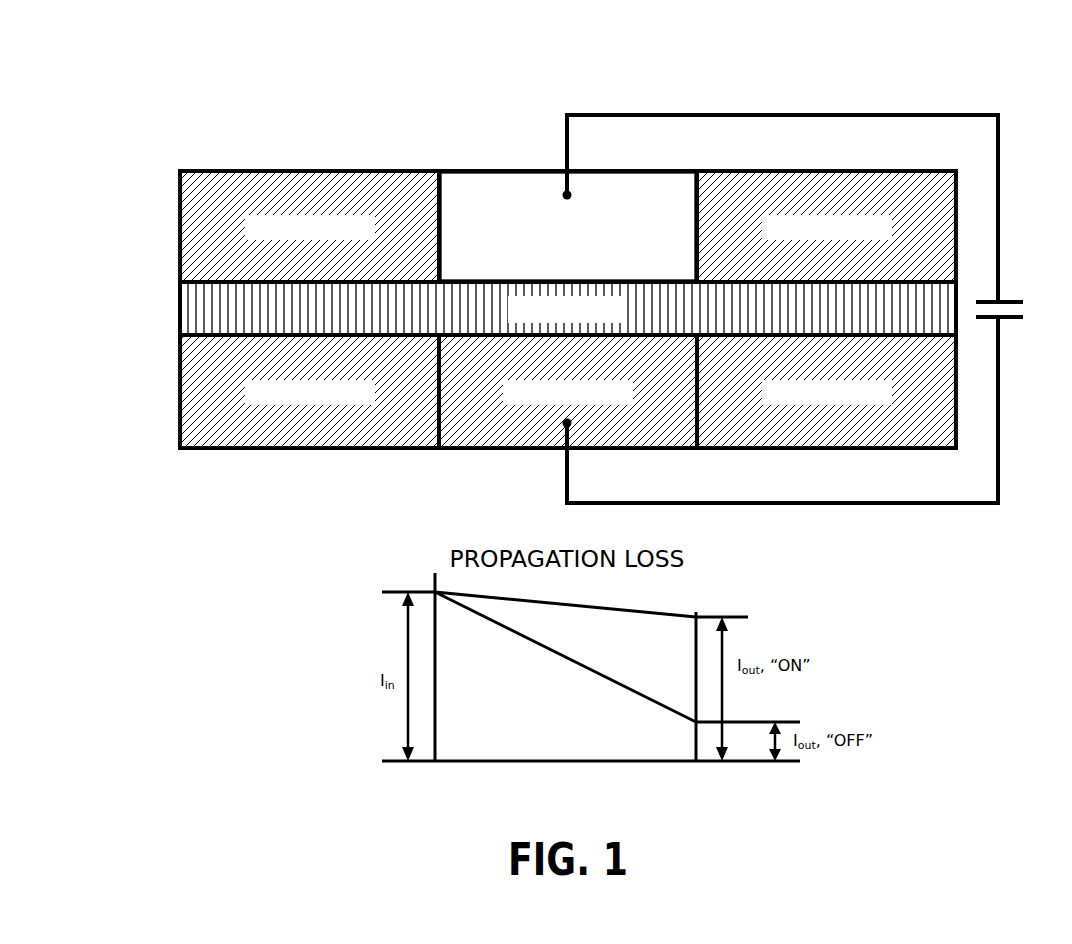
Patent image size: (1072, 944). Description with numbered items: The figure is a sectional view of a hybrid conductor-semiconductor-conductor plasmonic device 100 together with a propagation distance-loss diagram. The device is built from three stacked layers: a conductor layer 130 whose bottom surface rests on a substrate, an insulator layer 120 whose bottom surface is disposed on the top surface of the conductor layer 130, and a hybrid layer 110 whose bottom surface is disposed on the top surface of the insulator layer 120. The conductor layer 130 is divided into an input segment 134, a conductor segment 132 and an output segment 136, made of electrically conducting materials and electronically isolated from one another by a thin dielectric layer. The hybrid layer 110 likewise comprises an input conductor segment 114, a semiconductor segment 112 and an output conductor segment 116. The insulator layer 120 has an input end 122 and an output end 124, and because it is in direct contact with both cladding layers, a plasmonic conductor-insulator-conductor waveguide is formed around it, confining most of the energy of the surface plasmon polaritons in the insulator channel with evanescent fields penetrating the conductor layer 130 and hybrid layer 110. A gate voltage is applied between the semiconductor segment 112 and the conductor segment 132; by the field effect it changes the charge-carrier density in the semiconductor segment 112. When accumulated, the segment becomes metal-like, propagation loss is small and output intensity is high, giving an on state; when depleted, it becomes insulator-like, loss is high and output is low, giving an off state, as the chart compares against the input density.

The hybrid conductor-semiconductor-conductor plasmonic device 100 is at (51, 124).
The hybrid layer 110 is at (515, 170).
The semiconductor segment 112 is at (462, 190).
The input conductor segment 114 is at (197, 229).
The output conductor segment 116 is at (940, 228).
The insulator layer 120 is at (181, 291).
The input end 122 is at (192, 310).
The output end 124 is at (940, 310).
The conductor layer 130 is at (460, 448).
The conductor segment 132 is at (532, 430).
The input segment 134 is at (197, 400).
The output segment 136 is at (940, 390).